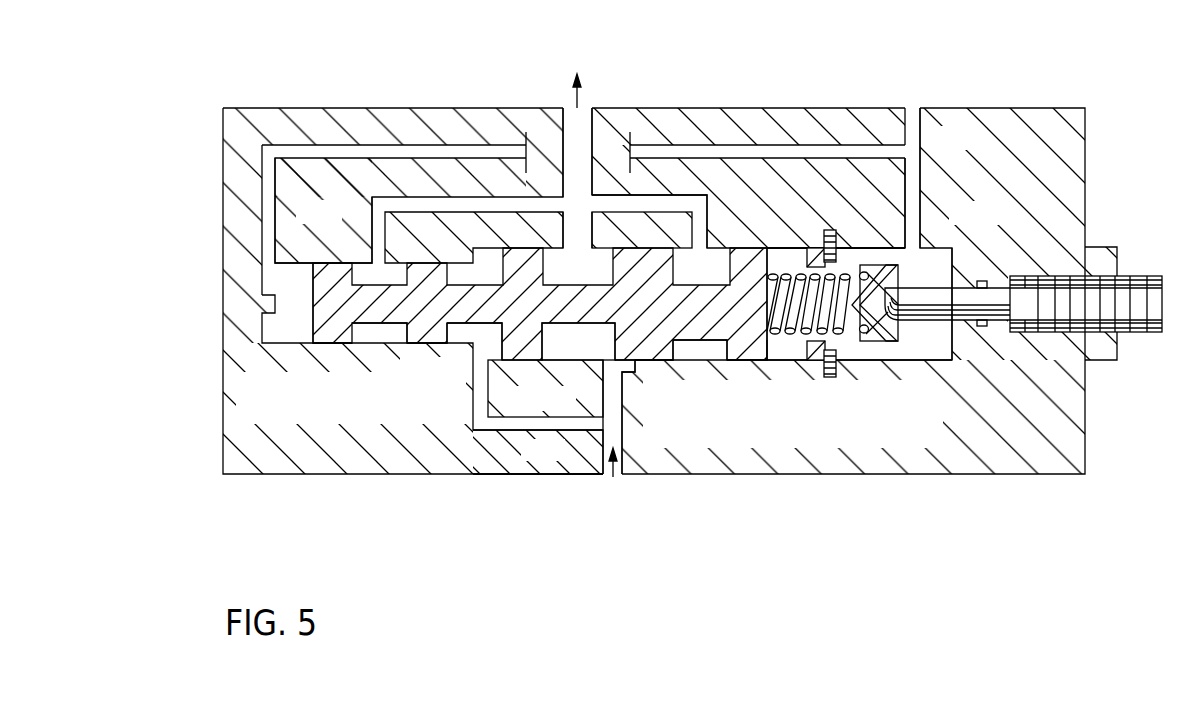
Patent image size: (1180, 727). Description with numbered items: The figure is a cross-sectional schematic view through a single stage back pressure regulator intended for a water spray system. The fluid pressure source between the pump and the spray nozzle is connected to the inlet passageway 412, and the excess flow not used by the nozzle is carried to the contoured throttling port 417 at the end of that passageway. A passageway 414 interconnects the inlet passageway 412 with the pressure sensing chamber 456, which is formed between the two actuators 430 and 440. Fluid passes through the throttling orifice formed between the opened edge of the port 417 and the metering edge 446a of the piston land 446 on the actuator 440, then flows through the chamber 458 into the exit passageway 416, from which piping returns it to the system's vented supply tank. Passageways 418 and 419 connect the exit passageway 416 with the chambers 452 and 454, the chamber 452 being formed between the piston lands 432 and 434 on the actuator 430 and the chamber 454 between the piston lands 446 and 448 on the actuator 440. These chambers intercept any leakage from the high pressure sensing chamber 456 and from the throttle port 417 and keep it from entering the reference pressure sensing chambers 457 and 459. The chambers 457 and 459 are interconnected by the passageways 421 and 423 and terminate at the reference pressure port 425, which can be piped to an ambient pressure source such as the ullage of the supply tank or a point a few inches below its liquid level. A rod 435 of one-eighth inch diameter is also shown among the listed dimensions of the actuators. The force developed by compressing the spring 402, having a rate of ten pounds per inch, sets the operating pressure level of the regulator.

The spring 402 is at (840, 341).
The inlet passageway 412 is at (601, 475).
The passageway 414 is at (500, 431).
The exit passageway 416 is at (593, 143).
The contoured throttling port 417 is at (577, 383).
The passageway 418 is at (371, 215).
The passageway 419 is at (635, 195).
The passageway 421 is at (261, 188).
The passageway 423 is at (923, 170).
The reference pressure port 425 is at (917, 107).
The actuator 430 is at (311, 318).
The piston land 432 is at (320, 345).
The piston land 434 is at (413, 345).
The rod 435 is at (453, 343).
The actuator 440 is at (767, 340).
The piston land 446 is at (655, 362).
The metering edge 446a is at (545, 388).
The piston land 448 is at (745, 362).
The chamber 452 is at (365, 346).
The chamber 454 is at (698, 341).
The pressure sensing chamber 456 is at (493, 349).
The reference pressure sensing chamber 457 is at (287, 303).
The chamber 458 is at (588, 347).
The reference pressure sensing chamber 459 is at (937, 262).